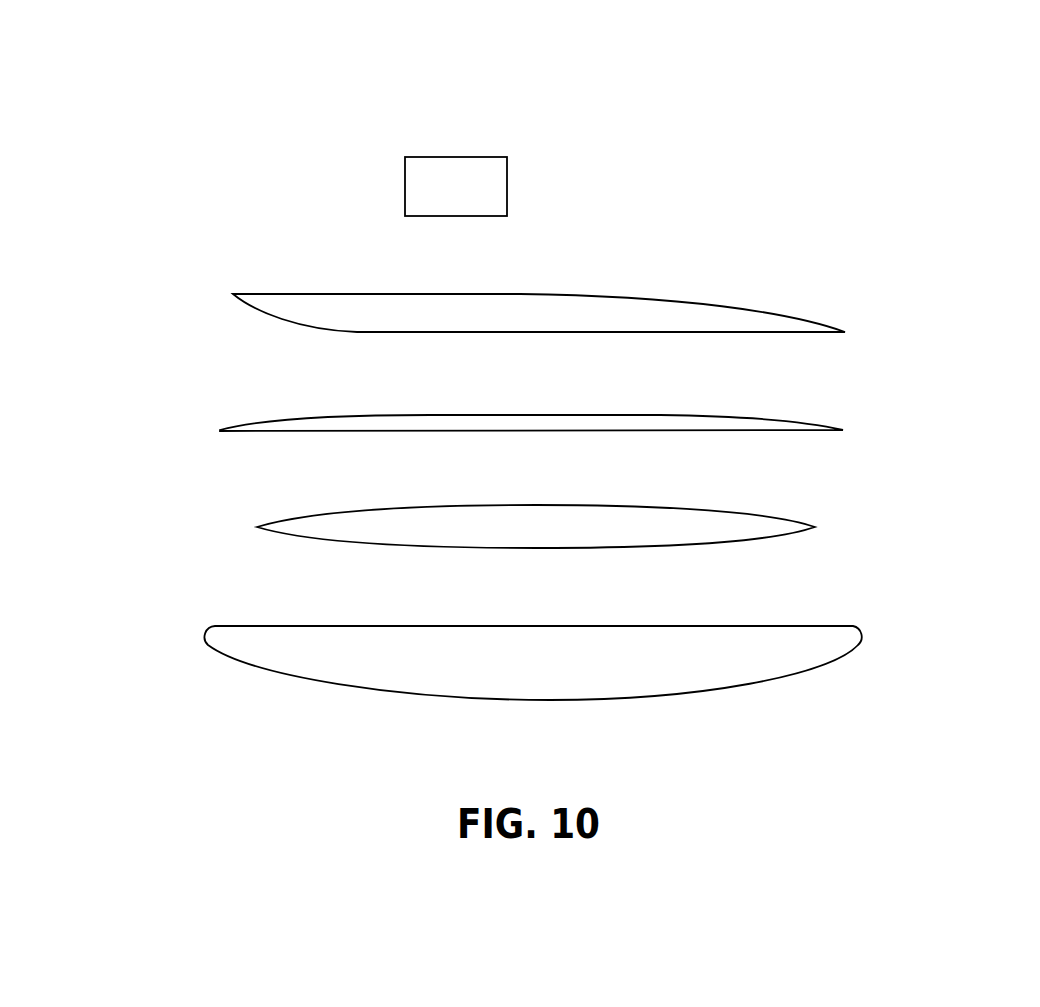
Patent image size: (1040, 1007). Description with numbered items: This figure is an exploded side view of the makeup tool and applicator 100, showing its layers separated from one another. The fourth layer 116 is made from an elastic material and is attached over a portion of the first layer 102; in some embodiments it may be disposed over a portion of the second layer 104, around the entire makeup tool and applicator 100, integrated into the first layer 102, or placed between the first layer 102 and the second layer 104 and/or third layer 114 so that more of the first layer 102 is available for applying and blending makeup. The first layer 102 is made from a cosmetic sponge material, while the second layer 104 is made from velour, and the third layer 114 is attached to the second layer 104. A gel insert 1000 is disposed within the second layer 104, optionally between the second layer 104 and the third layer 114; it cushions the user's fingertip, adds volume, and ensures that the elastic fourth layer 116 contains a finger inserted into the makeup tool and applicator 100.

The makeup tool and applicator 100 is at (938, 114).
The fourth layer 116 is at (507, 185).
The first layer 102 is at (845, 332).
The third layer 114 is at (843, 430).
The gel insert 1000 is at (815, 527).
The second layer 104 is at (863, 637).